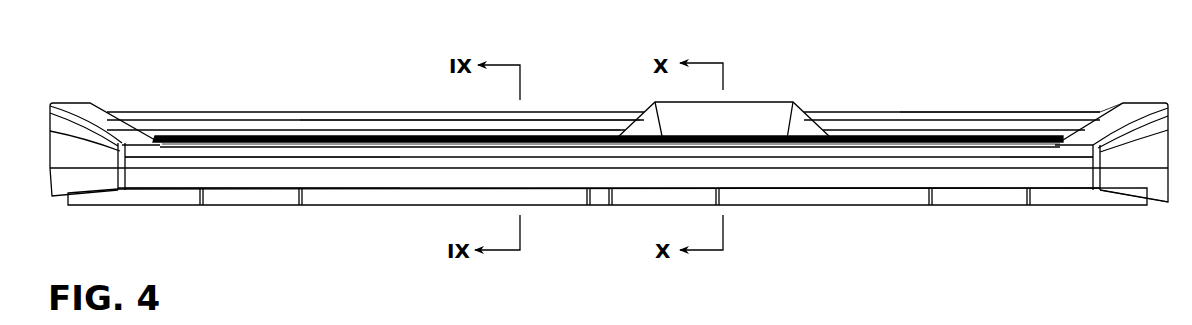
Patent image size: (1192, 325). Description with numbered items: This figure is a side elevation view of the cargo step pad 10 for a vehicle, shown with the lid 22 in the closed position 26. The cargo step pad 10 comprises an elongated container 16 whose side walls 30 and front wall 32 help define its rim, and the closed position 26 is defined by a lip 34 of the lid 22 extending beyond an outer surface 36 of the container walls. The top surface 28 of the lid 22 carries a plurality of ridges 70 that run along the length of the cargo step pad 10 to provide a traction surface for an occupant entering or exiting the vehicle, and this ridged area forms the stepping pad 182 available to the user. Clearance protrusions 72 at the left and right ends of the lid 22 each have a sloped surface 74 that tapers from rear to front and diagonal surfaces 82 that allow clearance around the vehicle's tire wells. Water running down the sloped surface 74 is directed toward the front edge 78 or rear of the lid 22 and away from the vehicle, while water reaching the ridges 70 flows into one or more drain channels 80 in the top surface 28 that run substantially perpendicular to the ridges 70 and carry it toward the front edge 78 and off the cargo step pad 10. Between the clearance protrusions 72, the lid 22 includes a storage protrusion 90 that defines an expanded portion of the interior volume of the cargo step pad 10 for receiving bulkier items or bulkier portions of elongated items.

The cargo step pad 10 is at (871, 65).
The container 16 is at (995, 215).
The lid 22 is at (966, 106).
The closed position 26 is at (1077, 215).
The top surface 28 is at (282, 133).
The side walls 30 is at (73, 183).
The front wall 32 is at (362, 182).
The lip 34 is at (250, 162).
The outer surface 36 is at (905, 182).
The ridges 70 is at (366, 135).
The clearance protrusions 72 is at (1147, 100).
The sloped surface 74 is at (1114, 121).
The front edge 78 is at (1023, 152).
The drain channels 80 is at (430, 138).
The diagonal surfaces 82 is at (1137, 159).
The storage protrusion 90 is at (755, 120).
The stepping pad 182 is at (222, 135).